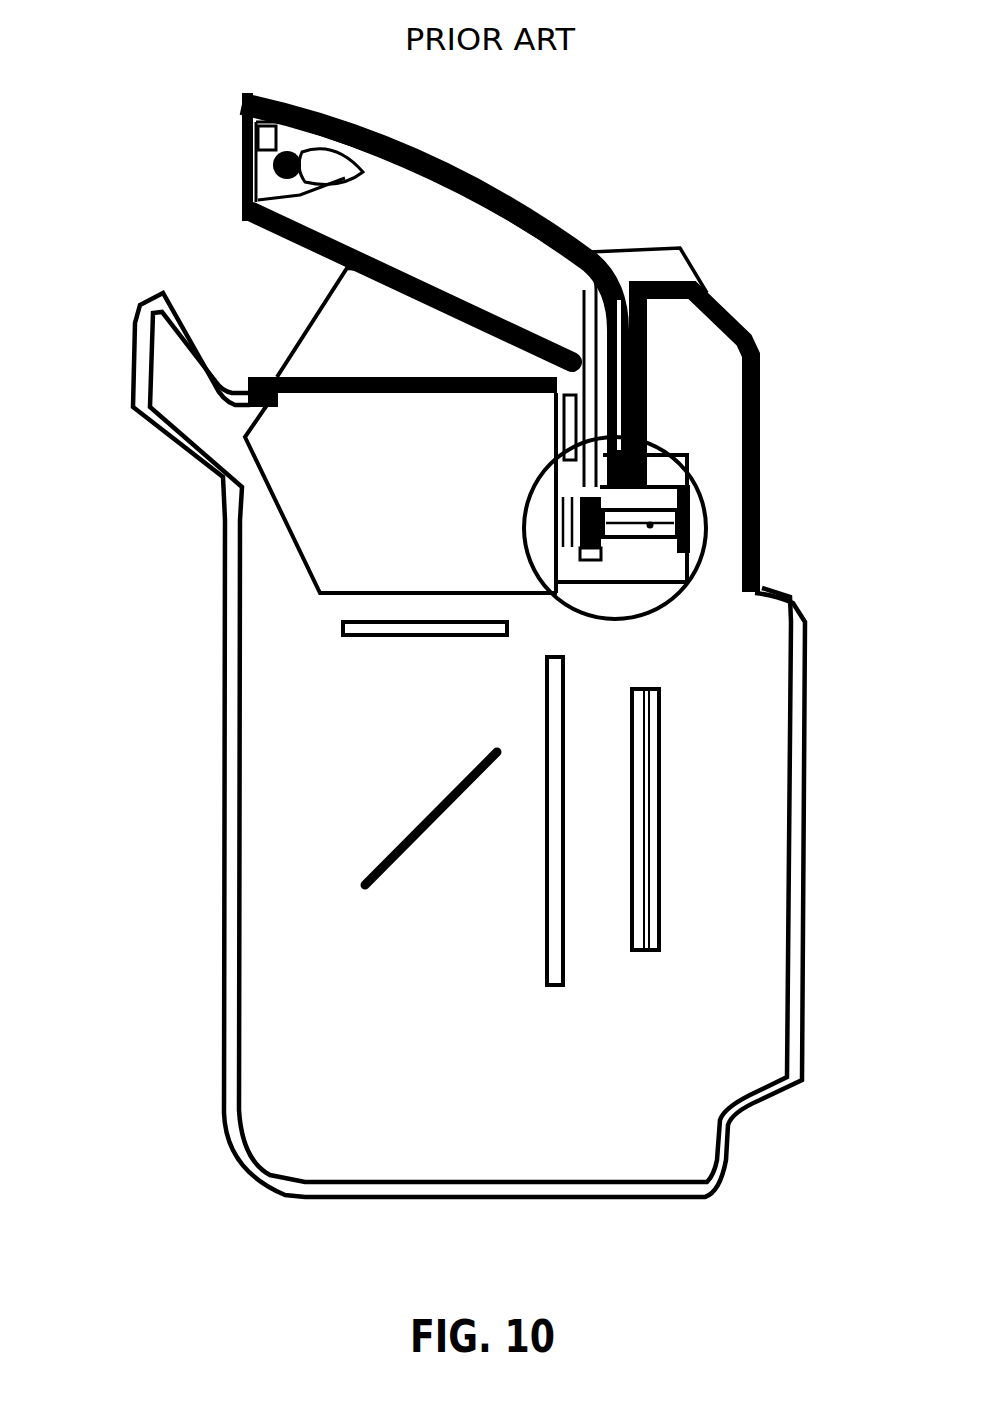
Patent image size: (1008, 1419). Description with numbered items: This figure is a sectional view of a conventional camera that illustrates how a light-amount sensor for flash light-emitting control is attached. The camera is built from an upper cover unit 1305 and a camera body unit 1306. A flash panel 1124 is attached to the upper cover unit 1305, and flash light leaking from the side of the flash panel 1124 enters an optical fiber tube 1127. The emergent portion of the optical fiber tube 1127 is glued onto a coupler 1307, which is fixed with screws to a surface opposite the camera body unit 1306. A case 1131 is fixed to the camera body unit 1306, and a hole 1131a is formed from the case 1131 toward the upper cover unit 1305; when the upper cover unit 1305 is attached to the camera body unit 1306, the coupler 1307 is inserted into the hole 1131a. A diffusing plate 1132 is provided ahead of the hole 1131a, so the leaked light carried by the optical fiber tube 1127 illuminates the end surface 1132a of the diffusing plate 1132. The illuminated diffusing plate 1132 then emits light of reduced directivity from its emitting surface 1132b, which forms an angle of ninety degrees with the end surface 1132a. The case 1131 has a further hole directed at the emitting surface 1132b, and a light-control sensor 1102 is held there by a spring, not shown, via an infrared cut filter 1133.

The flash panel 1124 is at (242, 150).
The optical fiber tube 1127 is at (557, 223).
The upper cover unit 1305 is at (707, 293).
The camera body unit 1306 is at (235, 751).
The coupler 1307 is at (572, 470).
The light-control sensor 1102 is at (690, 493).
The case 1131 is at (663, 560).
The hole 1131a is at (690, 468).
The infrared cut filter 1133 is at (693, 518).
The diffusing plate 1132 is at (557, 558).
The end surface 1132a is at (580, 515).
The emitting surface 1132b is at (605, 548).